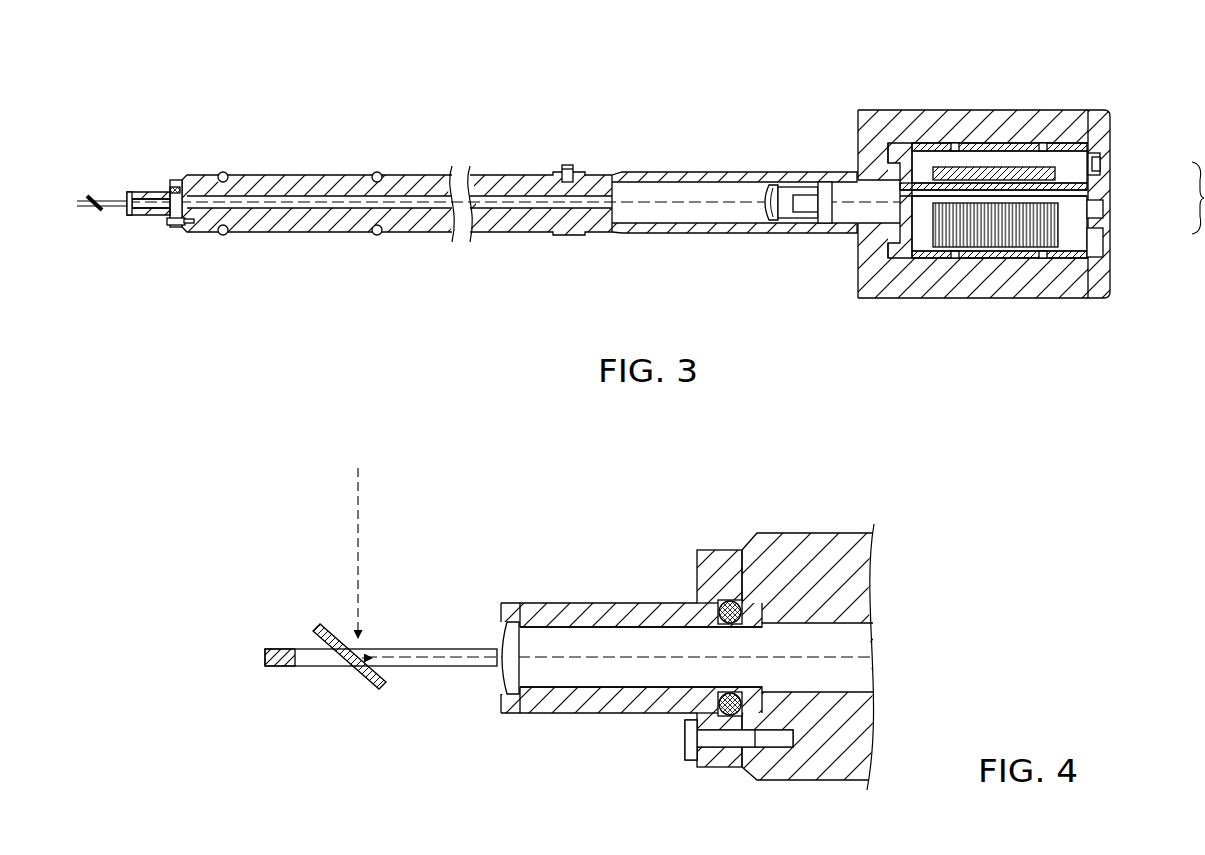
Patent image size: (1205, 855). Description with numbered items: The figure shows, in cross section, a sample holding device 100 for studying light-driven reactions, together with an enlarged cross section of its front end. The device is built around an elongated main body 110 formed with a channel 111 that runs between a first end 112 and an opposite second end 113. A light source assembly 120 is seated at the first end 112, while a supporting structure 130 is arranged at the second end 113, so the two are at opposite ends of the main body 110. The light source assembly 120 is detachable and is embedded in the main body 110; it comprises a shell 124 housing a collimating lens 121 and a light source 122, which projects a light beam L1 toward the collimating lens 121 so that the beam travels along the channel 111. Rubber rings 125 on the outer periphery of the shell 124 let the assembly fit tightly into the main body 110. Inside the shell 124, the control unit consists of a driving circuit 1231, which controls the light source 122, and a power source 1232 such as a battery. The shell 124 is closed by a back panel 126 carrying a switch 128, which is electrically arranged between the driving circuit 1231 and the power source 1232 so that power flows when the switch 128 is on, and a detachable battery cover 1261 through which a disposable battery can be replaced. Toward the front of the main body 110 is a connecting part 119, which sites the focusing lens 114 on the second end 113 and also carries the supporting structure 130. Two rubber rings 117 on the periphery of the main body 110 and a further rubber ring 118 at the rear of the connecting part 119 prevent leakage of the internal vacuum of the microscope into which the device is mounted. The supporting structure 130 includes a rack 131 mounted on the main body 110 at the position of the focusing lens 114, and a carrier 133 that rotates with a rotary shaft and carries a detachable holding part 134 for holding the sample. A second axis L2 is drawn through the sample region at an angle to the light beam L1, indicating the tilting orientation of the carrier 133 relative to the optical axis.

In FIG. 3, the sample holding device 100 is at (316, 60).
In FIG. 3, the main body 110 is at (433, 168).
In FIG. 3, the channel 111 is at (510, 196).
In FIG. 4, the channel 111 is at (812, 645).
In FIG. 3, the first end 112 is at (603, 196).
In FIG. 3, the second end 113 is at (132, 214).
In FIG. 4, the second end 113 is at (540, 645).
In FIG. 3, the focusing lens 114 is at (128, 195).
In FIG. 4, the focusing lens 114 is at (501, 645).
In FIG. 3, the rubber rings 117 is at (222, 171).
In FIG. 3, the rubber ring 118 is at (173, 180).
In FIG. 4, the rubber ring 118 is at (722, 606).
In FIG. 3, the connecting part 119 is at (151, 216).
In FIG. 4, the connecting part 119 is at (612, 705).
In FIG. 3, the light source assembly 120 is at (1122, 114).
In FIG. 3, the collimating lens 121 is at (763, 200).
In FIG. 3, the light source 122 is at (803, 200).
In FIG. 3, the shell 124 is at (905, 150).
In FIG. 3, the rubber rings 125 is at (955, 144).
In FIG. 3, the back panel 126 is at (1092, 296).
In FIG. 3, the switch 128 is at (1100, 163).
In FIG. 3, the driving circuit 1231 is at (1055, 173).
In FIG. 3, the power source 1232 is at (1055, 220).
In FIG. 3, the detachable battery cover 1261 is at (1106, 227).
In FIG. 3, the supporting structure 130 is at (92, 181).
In FIG. 4, the supporting structure 130 is at (272, 610).
In FIG. 4, the rack 131 is at (314, 663).
In FIG. 4, the carrier 133 is at (328, 630).
In FIG. 4, the holding part 134 is at (383, 674).
In FIG. 3, the light beam L1 is at (672, 196).
In FIG. 4, the light beam L1 is at (655, 655).
In FIG. 4, the emission axis L2 is at (360, 517).